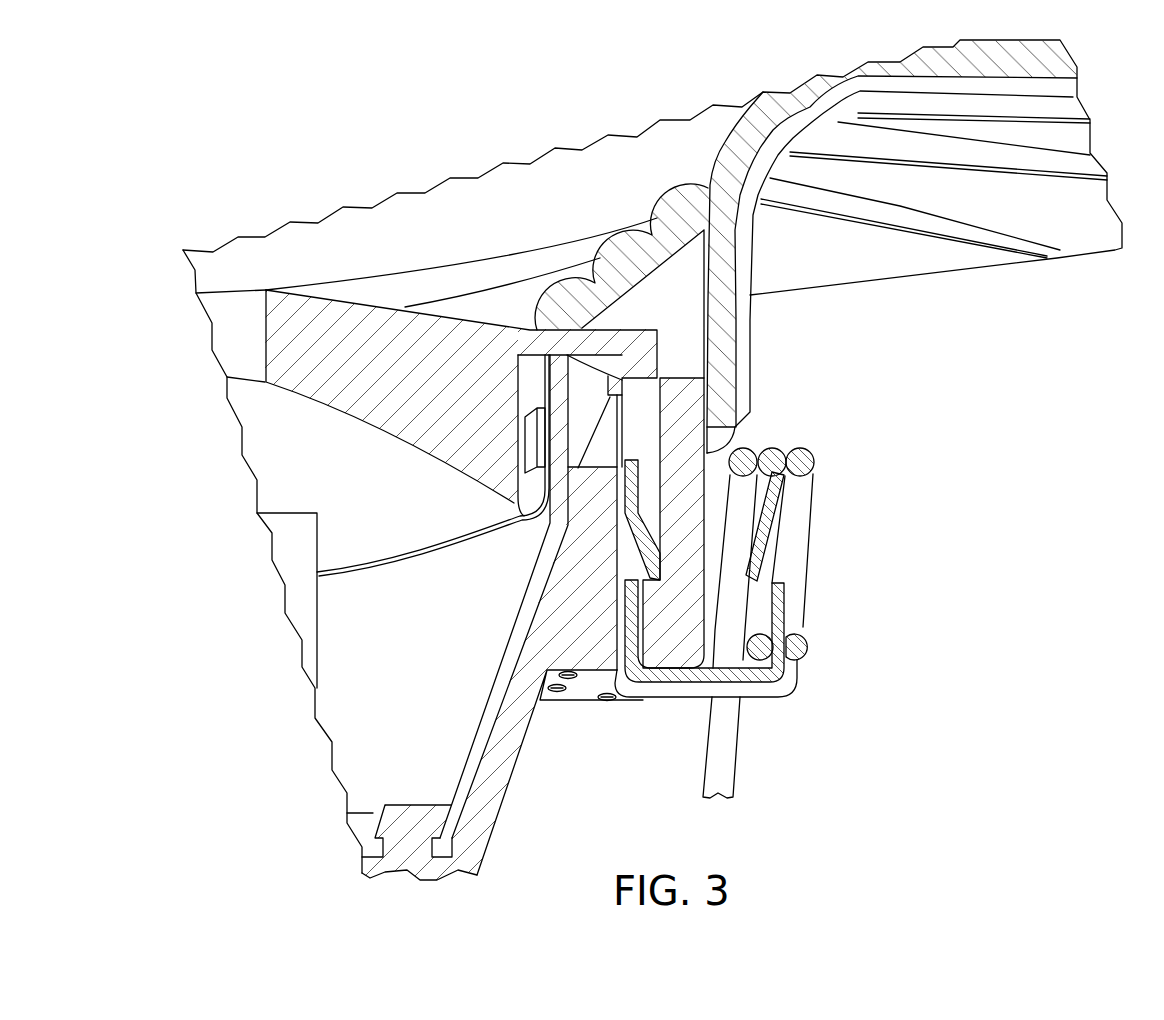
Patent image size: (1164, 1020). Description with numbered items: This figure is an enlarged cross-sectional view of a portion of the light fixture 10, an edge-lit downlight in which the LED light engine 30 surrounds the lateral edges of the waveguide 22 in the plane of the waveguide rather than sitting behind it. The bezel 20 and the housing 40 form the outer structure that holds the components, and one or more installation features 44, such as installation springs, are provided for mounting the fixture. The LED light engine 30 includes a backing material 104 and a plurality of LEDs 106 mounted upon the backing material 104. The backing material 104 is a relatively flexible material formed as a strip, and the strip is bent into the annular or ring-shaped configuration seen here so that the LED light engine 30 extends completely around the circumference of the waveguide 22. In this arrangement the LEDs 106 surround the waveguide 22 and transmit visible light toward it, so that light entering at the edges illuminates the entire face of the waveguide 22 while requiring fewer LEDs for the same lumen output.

The light fixture 10 is at (910, 737).
The bezel 20 is at (725, 302).
The waveguide 22 is at (443, 337).
The LED light engine 30 is at (547, 382).
The housing 40 is at (497, 817).
The installation features 44 is at (815, 462).
The backing material 104 is at (530, 505).
The LEDs 106 is at (528, 427).